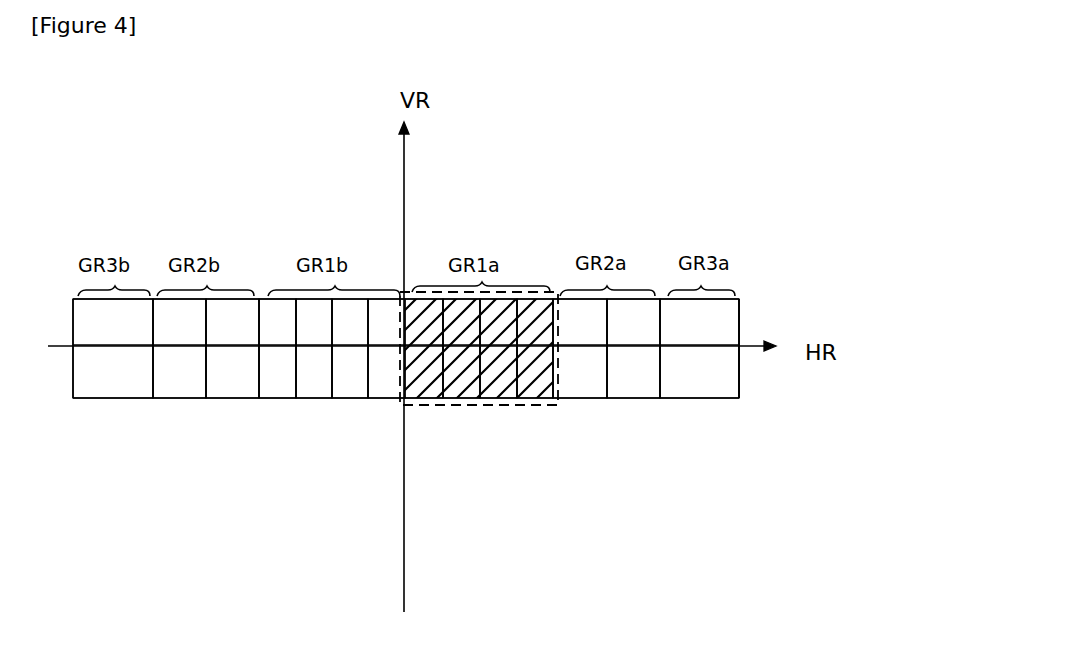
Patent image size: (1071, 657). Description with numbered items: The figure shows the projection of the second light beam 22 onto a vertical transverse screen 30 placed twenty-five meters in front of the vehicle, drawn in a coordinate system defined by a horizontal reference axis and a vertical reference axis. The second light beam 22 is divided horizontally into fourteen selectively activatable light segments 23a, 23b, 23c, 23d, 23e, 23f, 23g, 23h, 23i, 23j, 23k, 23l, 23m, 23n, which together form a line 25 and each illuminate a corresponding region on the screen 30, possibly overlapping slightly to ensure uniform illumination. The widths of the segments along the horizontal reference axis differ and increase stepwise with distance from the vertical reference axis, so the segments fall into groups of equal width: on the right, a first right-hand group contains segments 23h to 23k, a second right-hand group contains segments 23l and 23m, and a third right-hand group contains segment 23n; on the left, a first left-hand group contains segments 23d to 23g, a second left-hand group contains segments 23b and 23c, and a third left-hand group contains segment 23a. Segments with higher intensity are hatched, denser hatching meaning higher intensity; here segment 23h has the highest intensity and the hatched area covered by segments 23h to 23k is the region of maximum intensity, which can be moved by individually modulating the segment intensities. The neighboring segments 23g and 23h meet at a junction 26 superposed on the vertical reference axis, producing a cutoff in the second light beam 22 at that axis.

The screen 30 is at (175, 158).
The junction 26 is at (399, 329).
The second light beam 22 is at (640, 212).
The line 25 is at (741, 325).
The light segment 23a is at (98, 388).
The light segment 23b is at (172, 388).
The light segment 23c is at (228, 388).
The light segment 23d is at (277, 388).
The light segment 23e is at (312, 388).
The light segment 23f is at (351, 388).
The light segment 23g is at (385, 388).
The light segment 23h is at (427, 390).
The light segment 23i is at (460, 390).
The light segment 23j is at (500, 390).
The light segment 23k is at (533, 390).
The light segment 23l is at (585, 390).
The light segment 23m is at (638, 390).
The light segment 23n is at (713, 390).